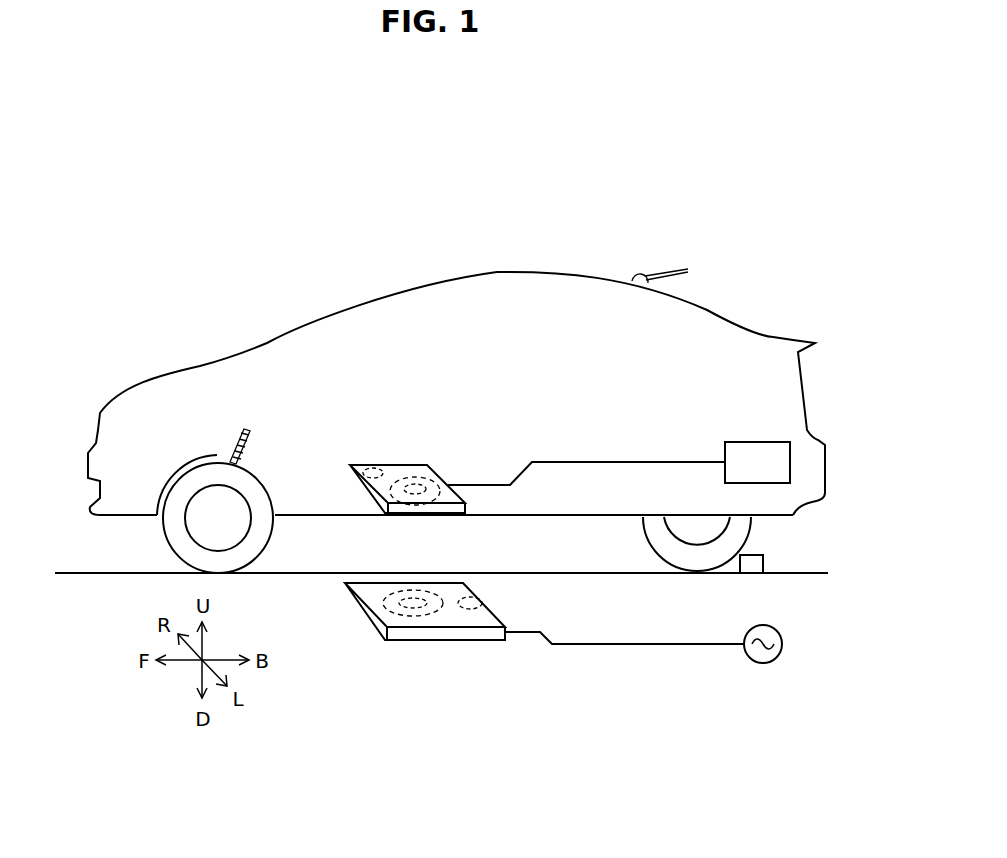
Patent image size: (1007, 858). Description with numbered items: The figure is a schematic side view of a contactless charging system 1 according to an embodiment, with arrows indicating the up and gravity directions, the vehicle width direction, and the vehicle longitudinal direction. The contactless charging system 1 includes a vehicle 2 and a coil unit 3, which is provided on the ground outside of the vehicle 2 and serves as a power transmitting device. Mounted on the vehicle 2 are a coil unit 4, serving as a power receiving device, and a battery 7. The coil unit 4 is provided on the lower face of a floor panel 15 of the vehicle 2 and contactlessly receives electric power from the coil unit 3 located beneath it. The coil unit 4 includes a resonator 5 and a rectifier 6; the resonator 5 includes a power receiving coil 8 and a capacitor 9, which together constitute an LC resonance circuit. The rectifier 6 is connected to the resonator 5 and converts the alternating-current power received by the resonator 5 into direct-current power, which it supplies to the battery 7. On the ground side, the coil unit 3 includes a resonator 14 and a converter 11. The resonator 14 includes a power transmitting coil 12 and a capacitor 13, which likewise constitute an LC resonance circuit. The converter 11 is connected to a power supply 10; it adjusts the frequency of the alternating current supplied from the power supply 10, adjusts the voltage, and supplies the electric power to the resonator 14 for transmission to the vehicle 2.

The contactless charging system 1 is at (274, 286).
The vehicle 2 is at (497, 272).
The coil unit 3 is at (478, 718).
The coil unit 4 is at (360, 395).
The resonator 5 is at (388, 425).
The rectifier 6 is at (373, 468).
The battery 7 is at (760, 442).
The power receiving coil 8 is at (446, 480).
The capacitor 9 is at (402, 478).
The power supply 10 is at (762, 663).
The converter 11 is at (480, 625).
The power transmitting coil 12 is at (421, 620).
The capacitor 13 is at (384, 641).
The resonator 14 is at (445, 686).
The floor panel 15 is at (575, 517).